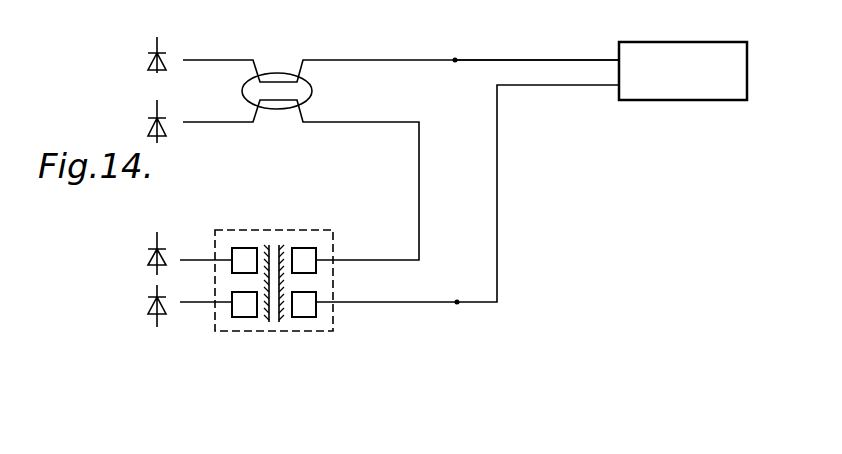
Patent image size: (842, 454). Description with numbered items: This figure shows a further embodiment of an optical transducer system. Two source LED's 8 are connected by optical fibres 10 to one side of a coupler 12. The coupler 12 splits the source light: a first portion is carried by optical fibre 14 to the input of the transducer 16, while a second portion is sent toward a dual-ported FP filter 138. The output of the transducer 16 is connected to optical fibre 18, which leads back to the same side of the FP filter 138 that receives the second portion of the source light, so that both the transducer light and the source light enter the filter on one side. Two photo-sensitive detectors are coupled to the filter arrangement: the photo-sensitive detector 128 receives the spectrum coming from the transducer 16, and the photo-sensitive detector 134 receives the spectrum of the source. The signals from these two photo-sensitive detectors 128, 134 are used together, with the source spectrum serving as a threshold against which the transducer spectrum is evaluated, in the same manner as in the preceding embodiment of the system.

The source LED's 8 is at (150, 128).
The optical fibres 10 is at (210, 60).
The coupler 12 is at (277, 110).
The optical fibre 14 is at (495, 59).
The transducer 16 is at (660, 42).
The optical fibre 18 is at (497, 173).
The photo-sensitive detector 134 is at (152, 255).
The photo-sensitive detector 128 is at (152, 309).
The dual-ported FP filter 138 is at (278, 330).